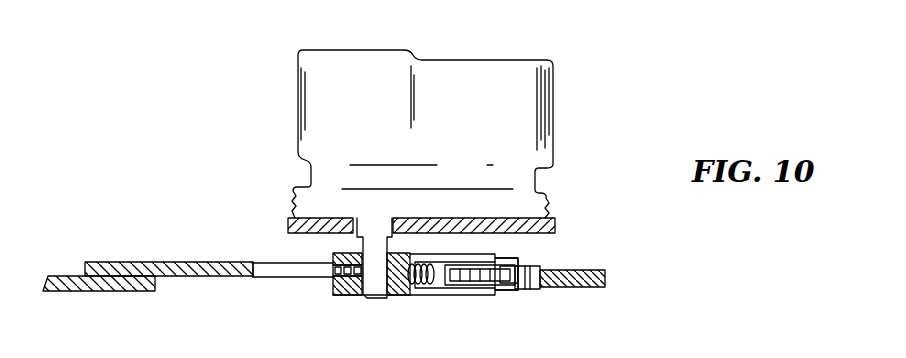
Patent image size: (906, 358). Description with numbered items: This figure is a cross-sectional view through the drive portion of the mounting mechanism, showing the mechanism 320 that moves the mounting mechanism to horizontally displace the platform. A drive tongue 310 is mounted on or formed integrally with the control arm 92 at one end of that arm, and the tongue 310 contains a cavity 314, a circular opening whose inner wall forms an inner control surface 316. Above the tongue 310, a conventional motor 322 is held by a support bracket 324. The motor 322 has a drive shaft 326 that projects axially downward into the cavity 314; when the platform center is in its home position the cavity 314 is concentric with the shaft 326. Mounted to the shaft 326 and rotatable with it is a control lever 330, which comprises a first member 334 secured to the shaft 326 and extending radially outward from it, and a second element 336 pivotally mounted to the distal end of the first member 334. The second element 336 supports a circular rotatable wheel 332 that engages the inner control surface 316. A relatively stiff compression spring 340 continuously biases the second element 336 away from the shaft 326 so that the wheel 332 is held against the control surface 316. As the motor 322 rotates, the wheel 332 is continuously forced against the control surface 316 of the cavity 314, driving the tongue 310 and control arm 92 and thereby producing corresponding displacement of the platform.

The control arm 92 is at (90, 292).
The drive tongue 310 is at (207, 278).
The cavity 314 is at (297, 273).
The inner control surface 316 is at (257, 266).
The mechanism 320 is at (578, 128).
The motor 322 is at (522, 70).
The support bracket 324 is at (552, 223).
The drive shaft 326 is at (375, 298).
The control lever 330 is at (445, 303).
The circular rotatable wheel 332 is at (519, 276).
The first member 334 is at (392, 297).
The second element 336 is at (514, 257).
The compression spring 340 is at (418, 287).